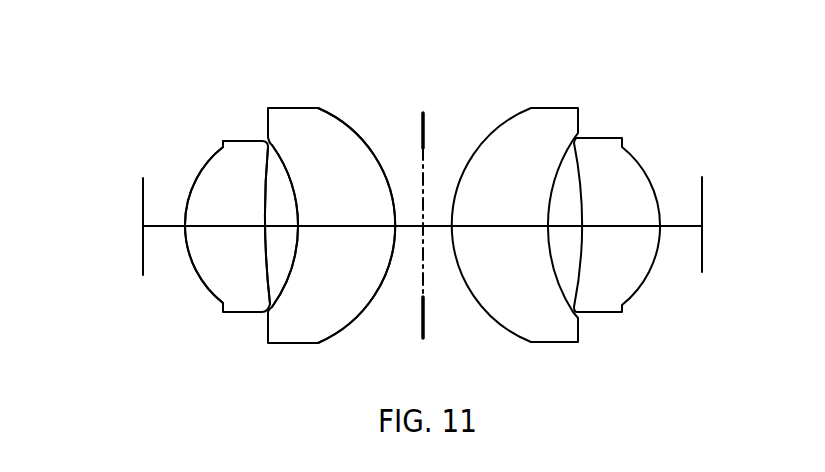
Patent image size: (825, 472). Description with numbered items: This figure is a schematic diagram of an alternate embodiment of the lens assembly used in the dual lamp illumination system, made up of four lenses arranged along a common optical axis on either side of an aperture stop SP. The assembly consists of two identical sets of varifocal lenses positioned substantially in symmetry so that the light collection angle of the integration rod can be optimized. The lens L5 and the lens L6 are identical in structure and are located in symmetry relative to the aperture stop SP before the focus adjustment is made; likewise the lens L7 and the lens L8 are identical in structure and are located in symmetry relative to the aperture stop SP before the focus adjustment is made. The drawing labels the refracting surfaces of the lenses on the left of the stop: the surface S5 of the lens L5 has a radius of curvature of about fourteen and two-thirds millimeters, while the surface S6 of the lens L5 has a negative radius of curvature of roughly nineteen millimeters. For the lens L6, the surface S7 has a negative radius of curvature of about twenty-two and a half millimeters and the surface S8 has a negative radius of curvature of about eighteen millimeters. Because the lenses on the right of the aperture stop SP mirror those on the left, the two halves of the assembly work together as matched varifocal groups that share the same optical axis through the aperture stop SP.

The lens L5 is at (176, 182).
The lens L6 is at (291, 179).
The lens L7 is at (555, 179).
The lens L8 is at (676, 181).
The aperture stop SP is at (470, 185).
The surface S5 is at (154, 262).
The surface S6 is at (286, 225).
The surface S7 is at (241, 265).
The surface S8 is at (356, 244).